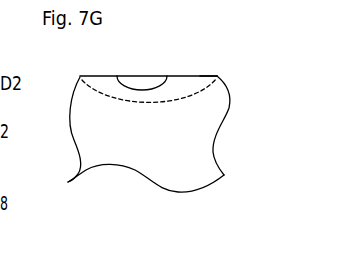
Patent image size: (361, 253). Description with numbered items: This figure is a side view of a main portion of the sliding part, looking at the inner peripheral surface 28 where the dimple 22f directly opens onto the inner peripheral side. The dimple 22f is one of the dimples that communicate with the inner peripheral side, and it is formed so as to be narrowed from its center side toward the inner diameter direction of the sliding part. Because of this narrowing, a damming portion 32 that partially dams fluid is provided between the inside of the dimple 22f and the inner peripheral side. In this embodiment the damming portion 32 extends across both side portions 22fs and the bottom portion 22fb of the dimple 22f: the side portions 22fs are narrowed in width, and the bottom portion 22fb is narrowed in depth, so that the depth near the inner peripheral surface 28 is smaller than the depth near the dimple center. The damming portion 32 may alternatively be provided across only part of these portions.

The inner peripheral surface 28 is at (212, 150).
The damming portion 32 is at (187, 75).
The end portion of incident surface Sd is at (208, 76).
The dimple 22f is at (148, 87).
The side portions 22fs is at (78, 80).
The bottom portion 22fb is at (146, 112).